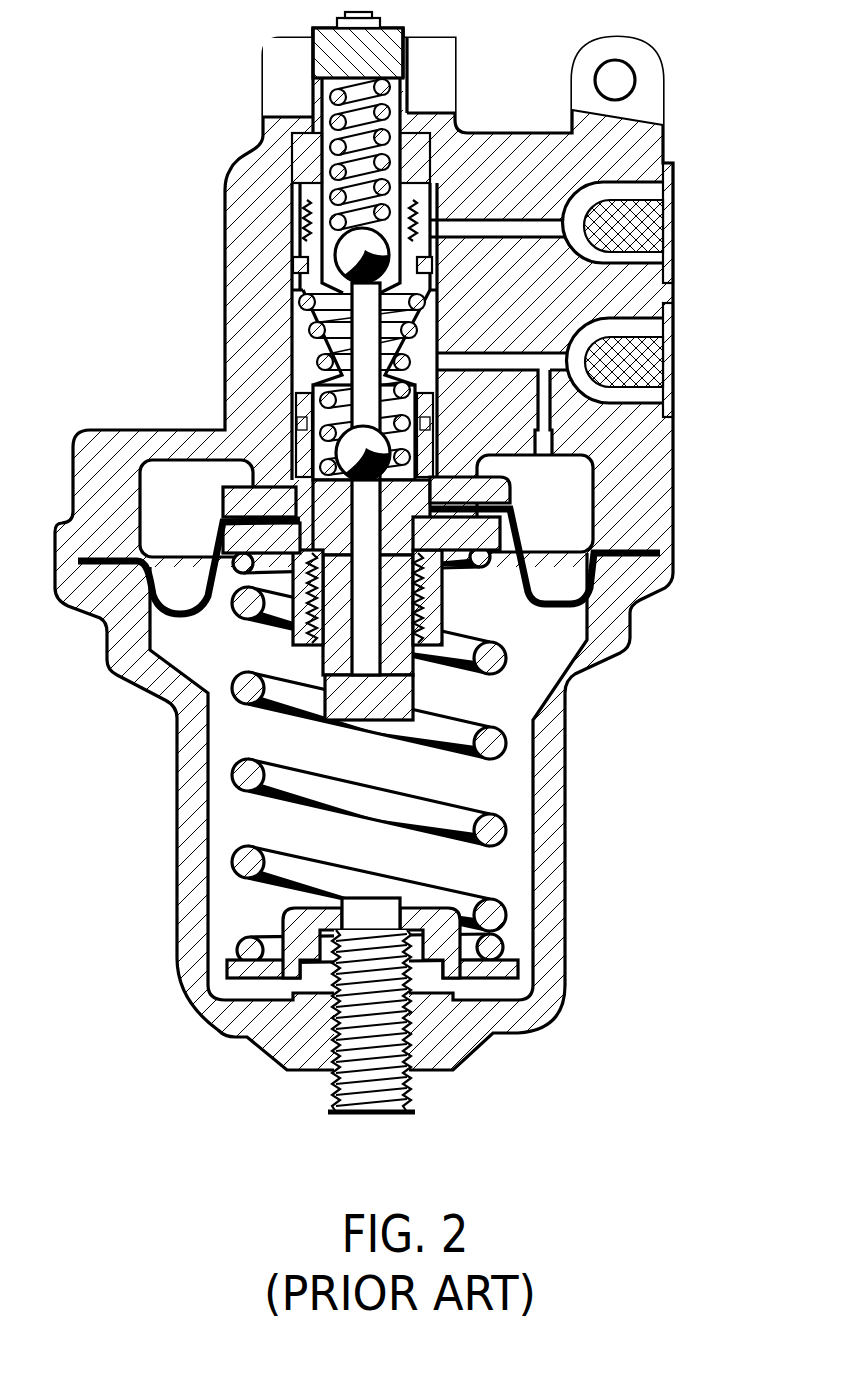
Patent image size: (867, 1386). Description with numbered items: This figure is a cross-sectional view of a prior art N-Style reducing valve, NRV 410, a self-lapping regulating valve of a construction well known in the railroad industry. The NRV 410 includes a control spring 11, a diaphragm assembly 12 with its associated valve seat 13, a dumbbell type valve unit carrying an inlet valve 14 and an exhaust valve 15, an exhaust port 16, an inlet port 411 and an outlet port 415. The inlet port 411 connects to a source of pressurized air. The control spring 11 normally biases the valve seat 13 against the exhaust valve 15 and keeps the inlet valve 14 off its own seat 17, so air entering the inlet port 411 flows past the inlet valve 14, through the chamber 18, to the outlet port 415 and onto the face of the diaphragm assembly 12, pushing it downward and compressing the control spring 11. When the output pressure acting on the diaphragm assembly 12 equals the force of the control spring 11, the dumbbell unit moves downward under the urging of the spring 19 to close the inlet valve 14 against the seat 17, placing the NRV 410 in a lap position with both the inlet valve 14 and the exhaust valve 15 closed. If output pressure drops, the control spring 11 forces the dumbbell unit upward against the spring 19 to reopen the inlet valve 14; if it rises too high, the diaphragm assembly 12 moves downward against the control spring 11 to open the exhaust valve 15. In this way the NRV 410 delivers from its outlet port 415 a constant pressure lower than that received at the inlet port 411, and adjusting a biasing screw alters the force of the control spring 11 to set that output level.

The NRV 410 is at (168, 42).
The control spring 11 is at (493, 797).
The diaphragm assembly 12 is at (495, 560).
The valve seat 13 is at (593, 478).
The inlet valve 14 is at (226, 182).
The exhaust valve 15 is at (300, 445).
The exhaust port 16 is at (203, 1007).
The seat 17 is at (293, 258).
The chamber 18 is at (292, 328).
The spring 19 is at (407, 82).
The inlet port 411 is at (675, 222).
The outlet port 415 is at (677, 357).